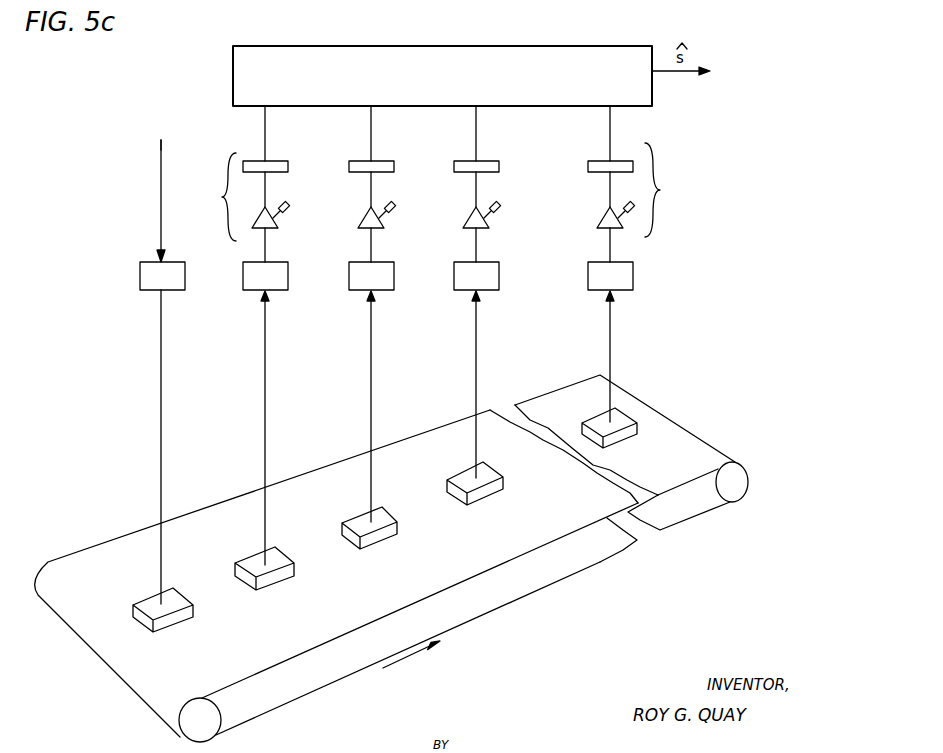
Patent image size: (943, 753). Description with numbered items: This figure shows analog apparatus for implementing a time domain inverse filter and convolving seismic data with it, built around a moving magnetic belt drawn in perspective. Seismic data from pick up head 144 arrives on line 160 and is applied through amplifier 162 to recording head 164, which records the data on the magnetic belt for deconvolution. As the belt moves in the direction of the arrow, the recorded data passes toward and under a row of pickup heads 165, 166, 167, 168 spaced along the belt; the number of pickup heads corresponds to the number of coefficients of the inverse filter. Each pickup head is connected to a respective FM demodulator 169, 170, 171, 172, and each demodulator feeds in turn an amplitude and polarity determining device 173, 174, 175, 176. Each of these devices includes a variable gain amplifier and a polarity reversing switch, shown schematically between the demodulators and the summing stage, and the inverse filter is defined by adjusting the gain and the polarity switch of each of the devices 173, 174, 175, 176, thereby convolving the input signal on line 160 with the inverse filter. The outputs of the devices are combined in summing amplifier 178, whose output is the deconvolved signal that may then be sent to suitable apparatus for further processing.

The pick up head 144 is at (159, 124).
The line 160 is at (161, 210).
The amplifier 162 is at (151, 293).
The recording head 164 is at (147, 598).
The pickup head 165 is at (250, 558).
The pickup head 166 is at (360, 514).
The pickup head 167 is at (470, 474).
The pickup head 168 is at (598, 419).
The FM demodulator 169 is at (254, 293).
The FM demodulator 170 is at (360, 293).
The FM demodulator 171 is at (466, 293).
The FM demodulator 172 is at (599, 293).
The amplitude and polarity determining device 173 is at (257, 184).
The amplitude and polarity determining device 174 is at (364, 184).
The amplitude and polarity determining device 175 is at (471, 184).
The amplitude and polarity determining device 176 is at (604, 184).
The summing amplifier 178 is at (604, 85).